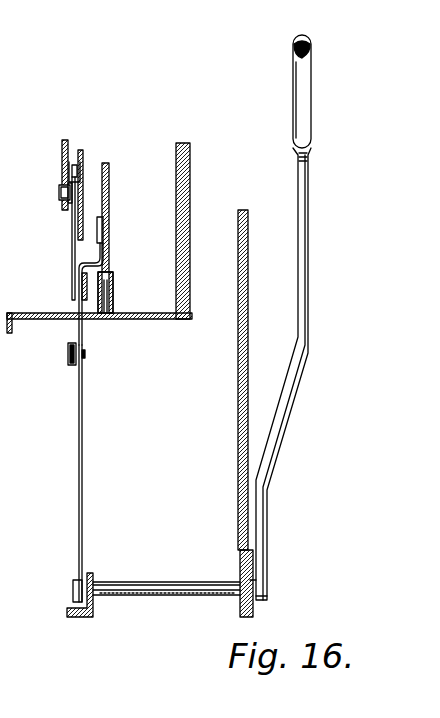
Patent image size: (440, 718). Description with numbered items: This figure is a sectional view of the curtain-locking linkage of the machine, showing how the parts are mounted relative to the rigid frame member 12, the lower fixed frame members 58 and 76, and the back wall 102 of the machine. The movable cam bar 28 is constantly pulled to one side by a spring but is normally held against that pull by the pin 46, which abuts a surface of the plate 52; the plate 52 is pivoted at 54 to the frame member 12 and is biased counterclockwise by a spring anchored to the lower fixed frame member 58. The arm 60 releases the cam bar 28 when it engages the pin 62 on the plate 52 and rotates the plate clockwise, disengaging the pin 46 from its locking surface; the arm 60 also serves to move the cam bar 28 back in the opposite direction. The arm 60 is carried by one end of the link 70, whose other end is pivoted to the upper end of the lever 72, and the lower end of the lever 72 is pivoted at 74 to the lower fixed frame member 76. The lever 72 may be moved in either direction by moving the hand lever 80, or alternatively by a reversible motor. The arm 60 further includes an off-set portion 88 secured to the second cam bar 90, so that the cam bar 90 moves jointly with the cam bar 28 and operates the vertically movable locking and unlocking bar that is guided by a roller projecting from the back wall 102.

The rigid frame member 12 is at (62, 156).
The movable cam bar 28 is at (83, 160).
The pin 46 is at (75, 164).
The plate 52 is at (72, 251).
The pivot 54 is at (59, 192).
The lower fixed frame member 58 is at (13, 328).
The arm 60 is at (80, 266).
The pin 62 is at (82, 289).
The link 70 is at (69, 364).
The lever 72 is at (83, 429).
The pivot 74 is at (73, 588).
The lower fixed frame member 76 is at (73, 613).
The lever 80 is at (309, 314).
The off-set portion 88 is at (93, 241).
The second cam bar 90 is at (109, 204).
The back wall 102 is at (176, 176).